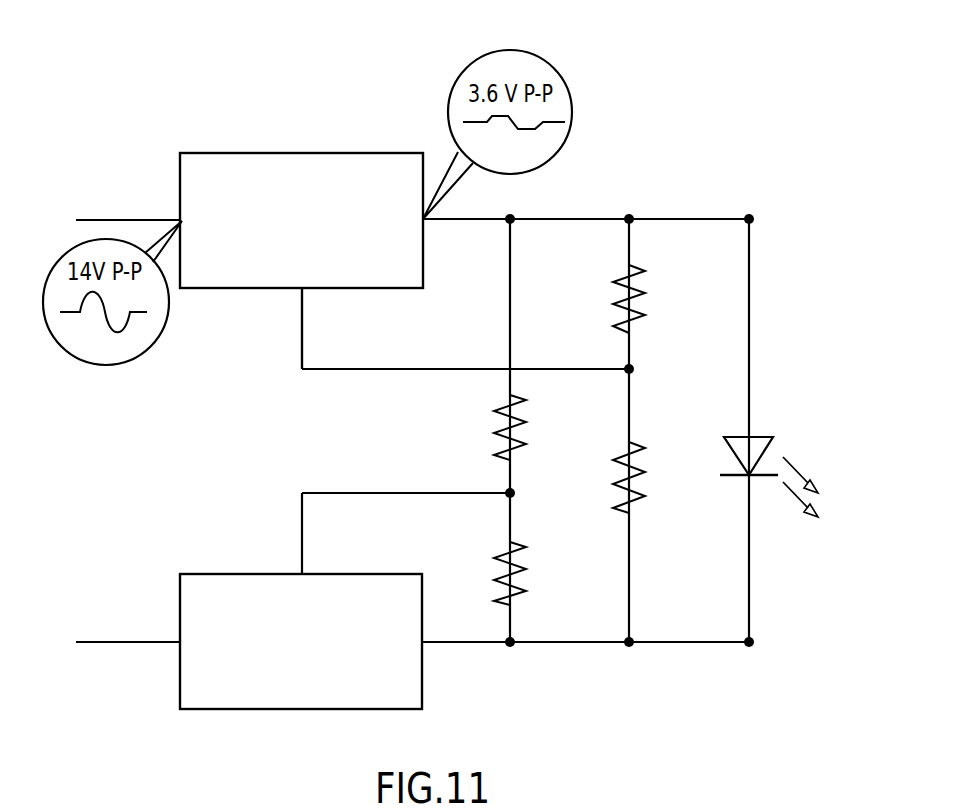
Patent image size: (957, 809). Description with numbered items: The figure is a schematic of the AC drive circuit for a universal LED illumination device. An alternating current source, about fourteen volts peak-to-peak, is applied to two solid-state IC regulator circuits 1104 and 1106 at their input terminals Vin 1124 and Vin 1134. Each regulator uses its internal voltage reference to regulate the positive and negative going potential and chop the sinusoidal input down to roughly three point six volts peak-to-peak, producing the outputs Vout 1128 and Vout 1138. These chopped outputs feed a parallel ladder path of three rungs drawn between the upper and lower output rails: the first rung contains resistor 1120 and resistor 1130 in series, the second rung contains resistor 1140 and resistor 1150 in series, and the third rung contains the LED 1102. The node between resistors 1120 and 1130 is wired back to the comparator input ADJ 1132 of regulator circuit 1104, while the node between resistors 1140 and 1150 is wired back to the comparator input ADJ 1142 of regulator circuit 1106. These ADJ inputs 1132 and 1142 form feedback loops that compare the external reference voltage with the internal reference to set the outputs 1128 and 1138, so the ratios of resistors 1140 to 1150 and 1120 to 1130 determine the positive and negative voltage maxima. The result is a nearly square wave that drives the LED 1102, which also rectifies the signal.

The LED 1102 is at (800, 468).
The IC regulator circuit 1104 is at (262, 152).
The IC regulator circuit 1106 is at (190, 574).
The resistor R1 1120 is at (510, 437).
The Vin input 1124 is at (202, 203).
The Vout output 1128 is at (382, 232).
The resistor R2 1130 is at (511, 575).
The comparator input ADJ 1132 is at (328, 268).
The Vin input 1134 is at (208, 622).
The Vout output 1138 is at (383, 662).
The resistor R3 1140 is at (633, 466).
The comparator input ADJ 1142 is at (272, 590).
The resistor R4 1150 is at (622, 312).